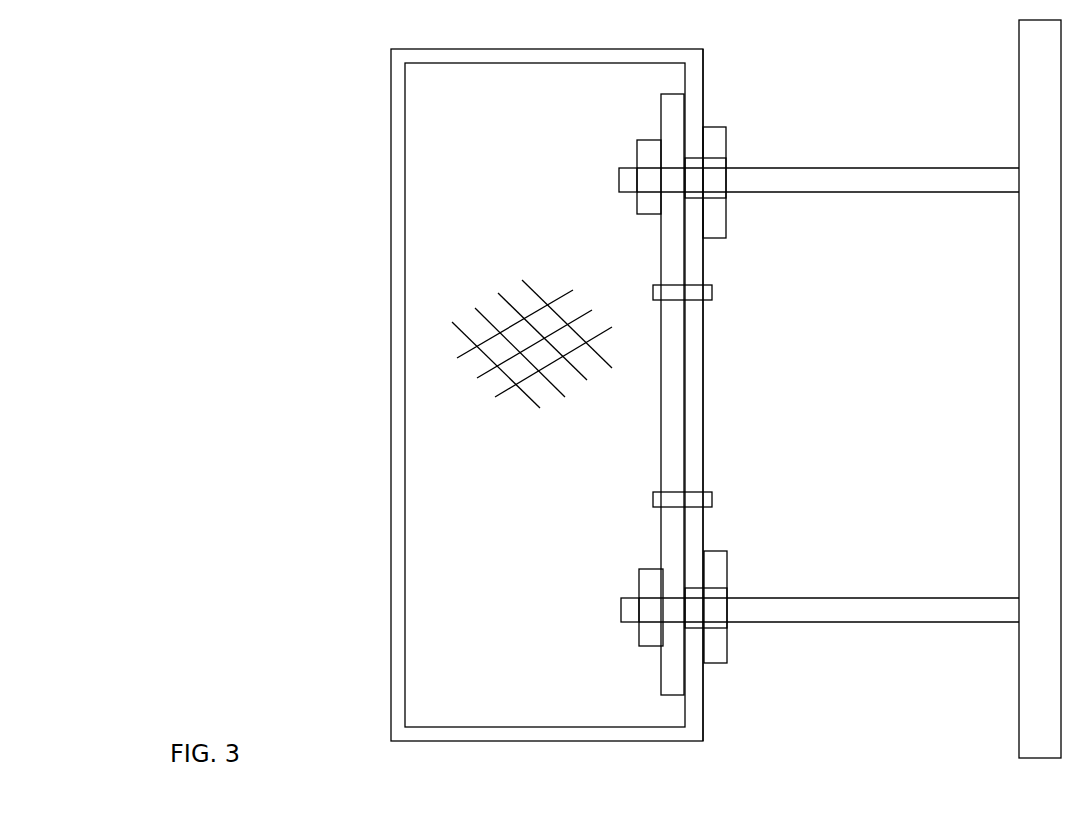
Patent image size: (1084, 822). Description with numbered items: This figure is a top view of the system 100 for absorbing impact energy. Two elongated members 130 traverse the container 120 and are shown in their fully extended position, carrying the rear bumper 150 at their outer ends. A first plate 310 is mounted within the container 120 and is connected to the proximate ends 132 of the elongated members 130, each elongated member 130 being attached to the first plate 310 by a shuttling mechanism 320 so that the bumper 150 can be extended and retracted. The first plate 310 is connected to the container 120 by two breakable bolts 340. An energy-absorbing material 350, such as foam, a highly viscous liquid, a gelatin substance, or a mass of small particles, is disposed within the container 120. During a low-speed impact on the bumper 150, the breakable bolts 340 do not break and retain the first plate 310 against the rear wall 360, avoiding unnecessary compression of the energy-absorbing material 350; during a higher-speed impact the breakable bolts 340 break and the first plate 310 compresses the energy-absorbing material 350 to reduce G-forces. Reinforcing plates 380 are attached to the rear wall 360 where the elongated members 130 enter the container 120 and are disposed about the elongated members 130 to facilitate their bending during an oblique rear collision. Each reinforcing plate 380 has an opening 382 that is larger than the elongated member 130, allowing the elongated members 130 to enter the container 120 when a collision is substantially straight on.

The system for absorbing impact energy 100 is at (218, 632).
The container 120 is at (390, 131).
The elongated member 130 is at (757, 167).
The proximate end 132 is at (625, 167).
The bumper 150 is at (1018, 363).
The first plate 310 is at (665, 94).
The shuttling mechanism 320 is at (636, 205).
The breakable bolt 340 is at (710, 297).
The energy-absorbing material 350 is at (472, 363).
The rear wall 360 is at (703, 102).
The reinforcing plate 380 is at (717, 222).
The opening 382 is at (717, 195).